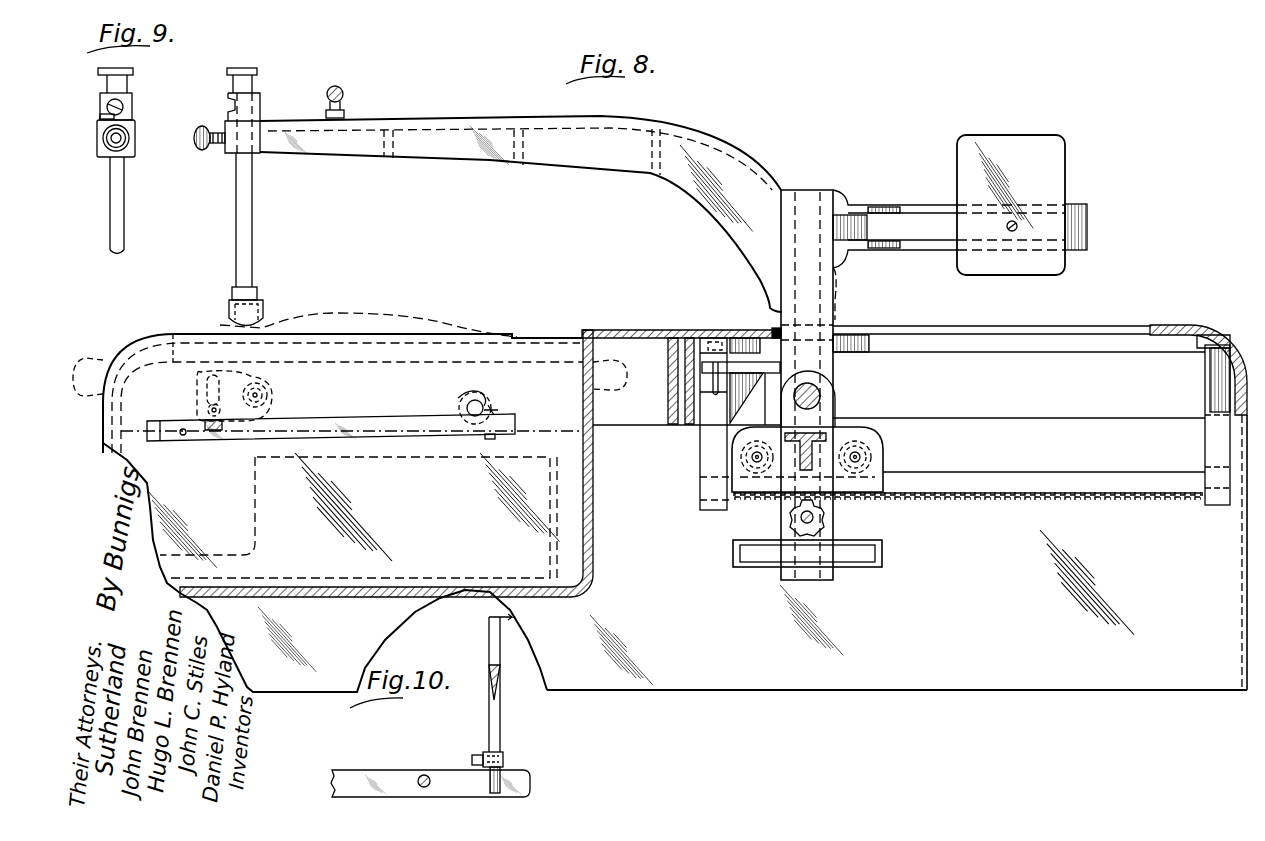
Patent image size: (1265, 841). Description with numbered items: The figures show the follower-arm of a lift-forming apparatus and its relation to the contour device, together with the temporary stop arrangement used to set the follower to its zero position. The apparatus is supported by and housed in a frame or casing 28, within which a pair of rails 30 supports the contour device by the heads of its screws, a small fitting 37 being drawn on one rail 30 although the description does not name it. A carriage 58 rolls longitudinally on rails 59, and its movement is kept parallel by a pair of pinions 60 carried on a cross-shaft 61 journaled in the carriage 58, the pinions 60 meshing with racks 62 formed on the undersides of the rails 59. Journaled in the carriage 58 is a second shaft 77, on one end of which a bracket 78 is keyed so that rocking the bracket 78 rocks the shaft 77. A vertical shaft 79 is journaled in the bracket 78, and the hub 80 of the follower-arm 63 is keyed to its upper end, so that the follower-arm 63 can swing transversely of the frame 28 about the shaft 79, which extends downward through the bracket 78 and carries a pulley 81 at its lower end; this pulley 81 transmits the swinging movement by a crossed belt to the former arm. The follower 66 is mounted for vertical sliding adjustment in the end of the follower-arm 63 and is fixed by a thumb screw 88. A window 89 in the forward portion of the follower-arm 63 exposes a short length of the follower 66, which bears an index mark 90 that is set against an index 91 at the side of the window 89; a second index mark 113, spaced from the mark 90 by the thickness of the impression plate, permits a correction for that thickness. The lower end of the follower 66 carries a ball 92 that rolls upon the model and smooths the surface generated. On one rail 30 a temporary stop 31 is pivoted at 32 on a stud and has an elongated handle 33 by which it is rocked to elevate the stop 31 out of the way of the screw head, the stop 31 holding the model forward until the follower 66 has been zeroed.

In FIG. 8, the frame or casing 28 is at (1140, 671).
In FIG. 8, the rails 30 is at (318, 422).
In FIG. 10, the rails 30 is at (440, 778).
In FIG. 10, the temporary stop 31 is at (474, 756).
In FIG. 10, the pivot 32 is at (504, 760).
In FIG. 10, the elongated handle 33 is at (502, 710).
In FIG. 8, the roller 37 is at (470, 393).
In FIG. 8, the carriage 58 is at (875, 437).
In FIG. 8, the rails 59 is at (963, 481).
In FIG. 8, the pinions 60 is at (828, 516).
In FIG. 8, the cross-shaft 61 is at (792, 519).
In FIG. 8, the racks 62 is at (963, 497).
In FIG. 8, the follower-arm 63 is at (531, 118).
In FIG. 9, the follower 66 is at (117, 201).
In FIG. 8, the follower 66 is at (247, 221).
In FIG. 8, the second shaft 77 is at (822, 390).
In FIG. 8, the bracket 78 is at (832, 316).
In FIG. 8, the vertical shaft 79 is at (807, 192).
In FIG. 8, the hub 80 is at (829, 288).
In FIG. 8, the pulley 81 is at (767, 566).
In FIG. 8, the thumb screw 88 is at (205, 150).
In FIG. 9, the window 89 is at (122, 98).
In FIG. 8, the window 89 is at (237, 106).
In FIG. 9, the index mark 90 is at (123, 111).
In FIG. 9, the index 91 is at (104, 116).
In FIG. 8, the ball 92 is at (263, 329).
In FIG. 9, the second index mark 113 is at (135, 124).